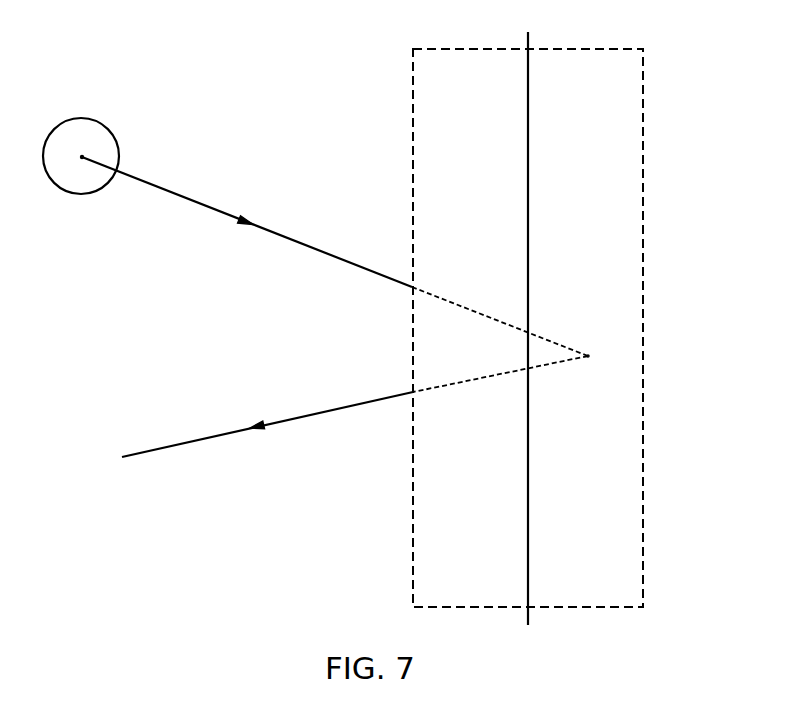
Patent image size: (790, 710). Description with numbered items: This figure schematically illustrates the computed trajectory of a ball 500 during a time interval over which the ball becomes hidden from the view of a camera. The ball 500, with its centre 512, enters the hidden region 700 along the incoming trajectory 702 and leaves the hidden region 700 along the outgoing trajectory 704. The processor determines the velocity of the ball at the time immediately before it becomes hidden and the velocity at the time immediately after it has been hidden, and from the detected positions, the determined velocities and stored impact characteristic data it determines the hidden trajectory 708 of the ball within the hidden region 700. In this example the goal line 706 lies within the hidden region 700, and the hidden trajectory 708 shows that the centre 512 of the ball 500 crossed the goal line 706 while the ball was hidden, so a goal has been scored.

The ball 500 is at (100, 120).
The centre 512 is at (81, 160).
The hidden region 700 is at (645, 125).
The incoming trajectory 702 is at (313, 248).
The outgoing trajectory 704 is at (320, 413).
The goal line 706 is at (528, 580).
The hidden trajectory 708 is at (572, 348).